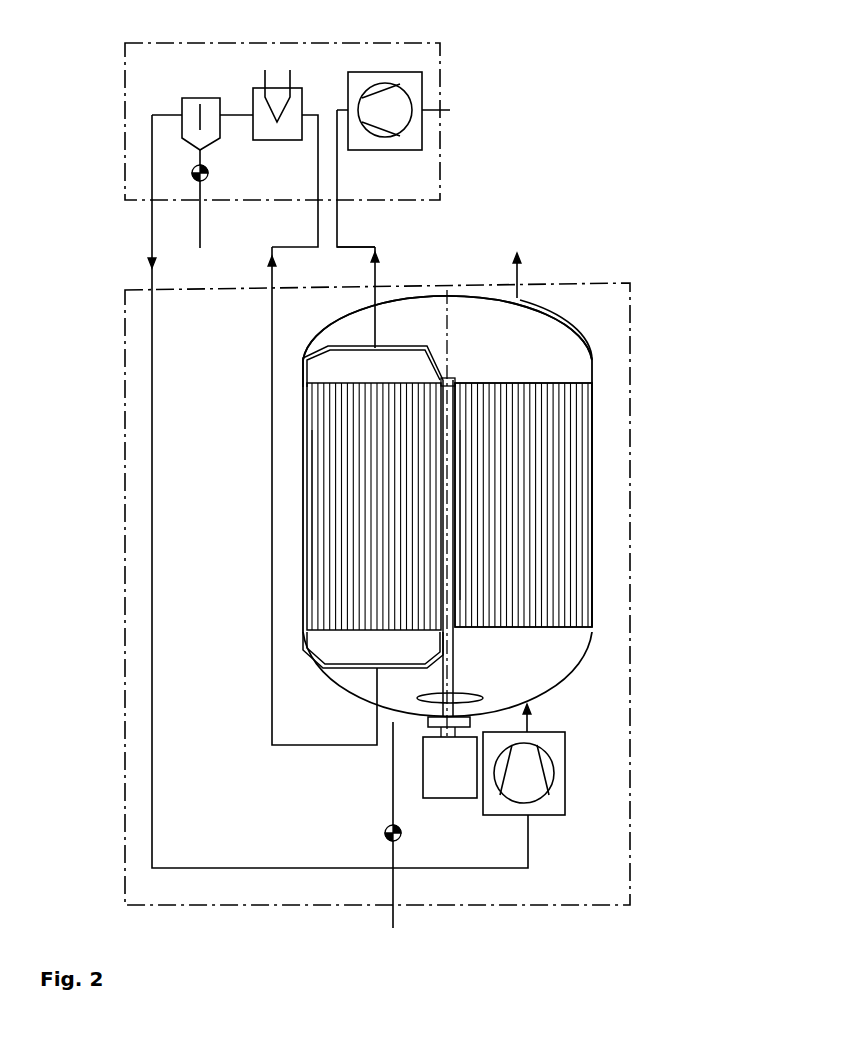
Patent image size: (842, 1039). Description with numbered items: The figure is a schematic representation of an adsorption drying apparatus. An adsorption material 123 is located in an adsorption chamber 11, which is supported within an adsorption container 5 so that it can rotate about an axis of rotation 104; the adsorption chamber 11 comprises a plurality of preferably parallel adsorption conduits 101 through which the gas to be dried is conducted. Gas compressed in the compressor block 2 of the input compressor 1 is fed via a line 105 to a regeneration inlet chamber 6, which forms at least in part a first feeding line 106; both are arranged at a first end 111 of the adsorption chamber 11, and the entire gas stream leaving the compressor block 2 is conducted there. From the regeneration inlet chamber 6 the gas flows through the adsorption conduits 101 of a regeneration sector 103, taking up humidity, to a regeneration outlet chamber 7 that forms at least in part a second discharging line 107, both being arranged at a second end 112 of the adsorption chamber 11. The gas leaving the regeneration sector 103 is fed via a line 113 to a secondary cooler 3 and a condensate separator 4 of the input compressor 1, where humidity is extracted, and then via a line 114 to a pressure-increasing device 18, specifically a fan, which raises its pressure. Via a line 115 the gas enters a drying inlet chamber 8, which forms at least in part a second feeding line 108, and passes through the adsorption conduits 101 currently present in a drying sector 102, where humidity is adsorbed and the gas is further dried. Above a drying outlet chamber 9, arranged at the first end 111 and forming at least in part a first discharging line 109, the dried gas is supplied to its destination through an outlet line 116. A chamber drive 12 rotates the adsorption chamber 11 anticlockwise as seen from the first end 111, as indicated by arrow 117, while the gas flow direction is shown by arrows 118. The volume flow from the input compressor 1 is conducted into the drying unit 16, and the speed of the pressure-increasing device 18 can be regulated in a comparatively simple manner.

The input compressor 1 is at (440, 43).
The compressor block 2 is at (422, 80).
The secondary cooler 3 is at (293, 88).
The condensate separator 4 is at (210, 98).
The adsorption container 5 is at (592, 356).
The regeneration inlet chamber 6 is at (340, 378).
The regeneration outlet chamber 7 is at (327, 644).
The drying inlet chamber 8 is at (578, 645).
The drying outlet chamber 9 is at (553, 362).
The adsorption chamber 11 is at (572, 462).
The chamber drive 12 is at (453, 784).
The drying unit 16 is at (630, 293).
The pressure-increasing device 18 is at (565, 760).
The adsorption conduits 101 is at (437, 495).
The drying sector 102 is at (558, 445).
The regeneration sector 103 is at (377, 442).
The axis of rotation 104 is at (462, 301).
The line 105 is at (375, 247).
The first feeding line 106 is at (383, 322).
The second discharging line 107 is at (366, 694).
The second feeding line 108 is at (573, 680).
The first discharging line 109 is at (585, 320).
The first end 111 is at (505, 375).
The second end 112 is at (545, 643).
The line 113 is at (276, 748).
The line 114 is at (237, 870).
The line 115 is at (528, 713).
The outlet line 116 is at (561, 340).
The arrow 117 is at (437, 703).
The arrows 118 is at (148, 265).
The adsorption material 123 is at (542, 577).